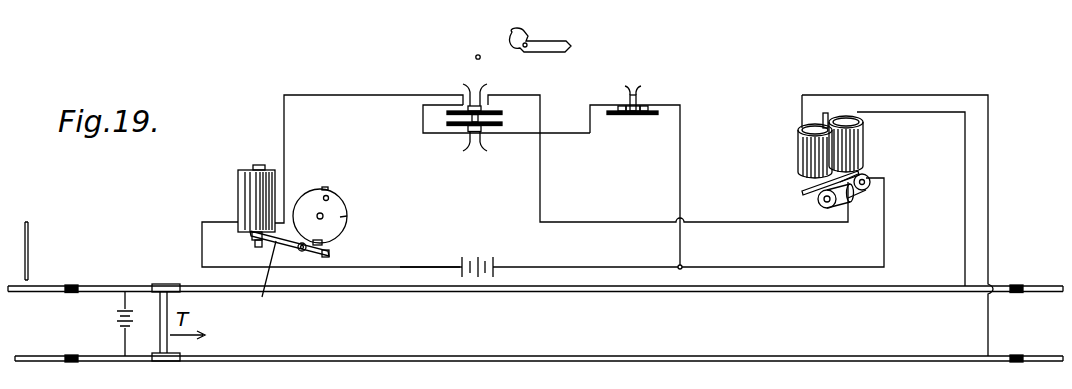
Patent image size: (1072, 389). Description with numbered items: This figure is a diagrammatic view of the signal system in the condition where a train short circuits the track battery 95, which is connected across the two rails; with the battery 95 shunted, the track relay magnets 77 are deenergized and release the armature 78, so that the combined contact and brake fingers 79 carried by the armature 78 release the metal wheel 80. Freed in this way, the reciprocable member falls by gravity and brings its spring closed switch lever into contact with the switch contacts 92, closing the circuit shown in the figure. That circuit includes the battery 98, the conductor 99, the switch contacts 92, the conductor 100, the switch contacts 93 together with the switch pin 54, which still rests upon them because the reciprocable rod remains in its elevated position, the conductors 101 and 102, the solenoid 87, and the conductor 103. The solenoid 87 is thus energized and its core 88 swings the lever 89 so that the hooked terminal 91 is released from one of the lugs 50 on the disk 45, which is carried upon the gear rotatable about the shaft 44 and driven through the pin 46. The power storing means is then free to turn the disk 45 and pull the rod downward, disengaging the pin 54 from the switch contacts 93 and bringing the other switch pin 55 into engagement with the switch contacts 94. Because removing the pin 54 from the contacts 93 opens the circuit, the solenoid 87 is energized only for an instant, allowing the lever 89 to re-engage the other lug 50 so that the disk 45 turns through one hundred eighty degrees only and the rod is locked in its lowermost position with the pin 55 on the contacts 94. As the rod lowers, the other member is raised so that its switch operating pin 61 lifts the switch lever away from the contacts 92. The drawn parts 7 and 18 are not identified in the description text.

The signal post 7 is at (29, 250).
The key latch 18 is at (548, 42).
The shaft 44 is at (323, 214).
The disk 45 is at (340, 217).
The pin 46 is at (327, 196).
The lugs 50 is at (322, 242).
The switch pin 54 is at (476, 148).
The switch pin 55 is at (478, 55).
The switch operating pin 61 is at (631, 92).
The electric magnets 77 is at (866, 140).
The armature 78 is at (805, 189).
The circuit closing and brake applying fingers 79 is at (852, 196).
The metal wheel 80 is at (818, 200).
The solenoid 87 is at (247, 190).
The core 88 is at (258, 247).
The lever 89 is at (269, 282).
The hooked terminal 91 is at (329, 254).
The switch contacts 92 is at (641, 101).
The switch contacts 93 is at (468, 144).
The switch contacts 94 is at (468, 98).
The battery 95 is at (118, 318).
The battery 98 is at (480, 256).
The conductor 99 is at (612, 250).
The conductor 100 is at (579, 134).
The conductor 101 is at (421, 117).
The conductor 102 is at (330, 95).
The conductor 103 is at (414, 267).